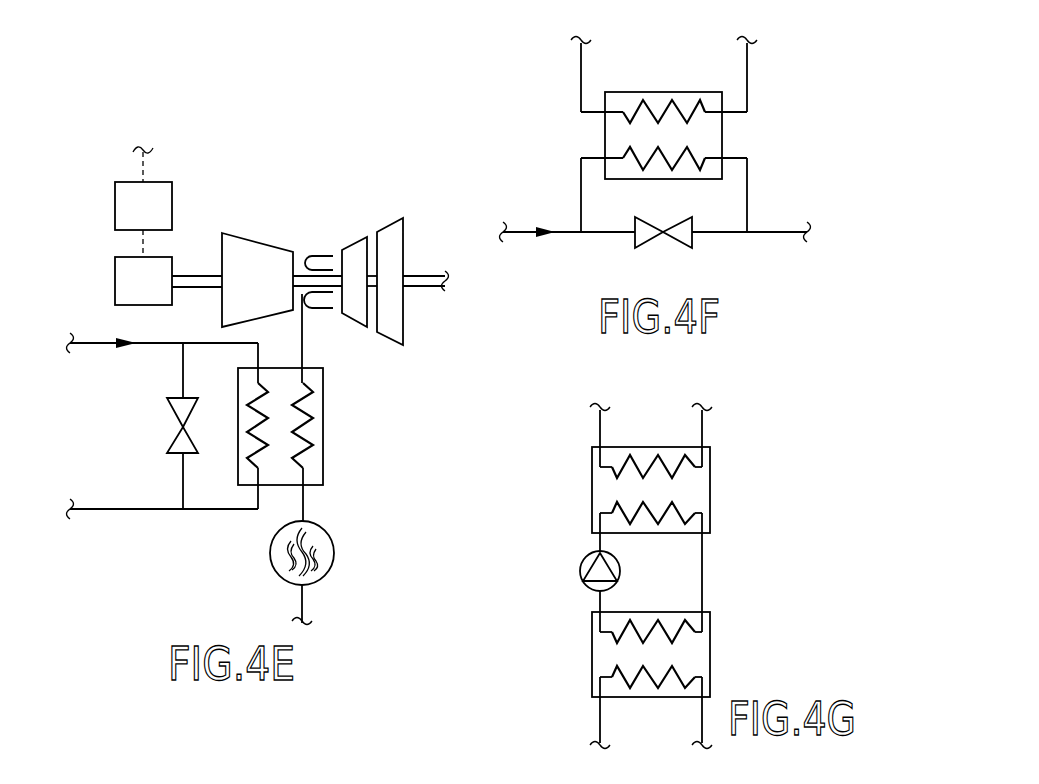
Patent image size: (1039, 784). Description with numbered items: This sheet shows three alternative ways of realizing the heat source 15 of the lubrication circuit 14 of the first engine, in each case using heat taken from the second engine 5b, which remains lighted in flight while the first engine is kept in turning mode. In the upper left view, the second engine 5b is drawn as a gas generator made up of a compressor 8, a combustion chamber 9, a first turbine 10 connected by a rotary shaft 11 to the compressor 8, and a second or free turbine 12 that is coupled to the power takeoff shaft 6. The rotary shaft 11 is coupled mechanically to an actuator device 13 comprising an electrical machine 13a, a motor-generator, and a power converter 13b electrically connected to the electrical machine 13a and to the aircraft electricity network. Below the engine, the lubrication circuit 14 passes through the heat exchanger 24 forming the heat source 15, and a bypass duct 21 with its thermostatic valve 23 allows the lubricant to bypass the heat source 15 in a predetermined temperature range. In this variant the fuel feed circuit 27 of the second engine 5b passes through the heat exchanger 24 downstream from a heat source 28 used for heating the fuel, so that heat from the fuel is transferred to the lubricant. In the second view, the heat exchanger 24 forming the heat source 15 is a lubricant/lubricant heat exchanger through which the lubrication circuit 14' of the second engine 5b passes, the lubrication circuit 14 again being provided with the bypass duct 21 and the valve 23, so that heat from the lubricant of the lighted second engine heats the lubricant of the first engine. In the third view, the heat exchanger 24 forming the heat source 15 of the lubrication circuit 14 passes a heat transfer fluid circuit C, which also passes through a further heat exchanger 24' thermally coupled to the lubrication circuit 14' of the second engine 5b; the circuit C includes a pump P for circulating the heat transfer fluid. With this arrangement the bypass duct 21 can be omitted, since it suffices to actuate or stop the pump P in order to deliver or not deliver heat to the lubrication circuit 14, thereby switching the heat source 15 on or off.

In FIG. 4E, the second engine 5b is at (147, 108).
In FIG. 4E, the actuator device 13 is at (192, 165).
In FIG. 4E, the electrical machine 13a is at (157, 292).
In FIG. 4E, the power converter 13b is at (157, 217).
In FIG. 4E, the rotary shaft 11 is at (198, 275).
In FIG. 4E, the compressor 8 is at (262, 292).
In FIG. 4E, the combustion chamber 9 is at (318, 256).
In FIG. 4E, the first turbine 10 is at (350, 319).
In FIG. 4E, the second turbine 12 is at (391, 228).
In FIG. 4E, the power takeoff shaft 6 is at (437, 287).
In FIG. 4E, the thermostatic valve 23 is at (181, 421).
In FIG. 4F, the thermostatic valve 23 is at (662, 239).
In FIG. 4E, the bypass duct 21 is at (182, 481).
In FIG. 4F, the bypass duct 21 is at (720, 235).
In FIG. 4E, the lubrication circuit 14 is at (163, 524).
In FIG. 4F, the lubrication circuit 14 is at (779, 247).
In FIG. 4G, the lubrication circuit 14 is at (585, 713).
In FIG. 4F, the lubrication circuit of the second engine 14' is at (688, 75).
In FIG. 4G, the lubrication circuit of the second engine 14' is at (676, 436).
In FIG. 4E, the heat source 15 is at (338, 413).
In FIG. 4F, the heat source 15 is at (766, 127).
In FIG. 4G, the heat source 15 is at (586, 637).
In FIG. 4E, the heat exchanger 24 is at (376, 407).
In FIG. 4F, the heat exchanger 24 is at (559, 135).
In FIG. 4G, the heat exchanger 24 is at (746, 654).
In FIG. 4G, the heat exchanger 24' is at (745, 490).
In FIG. 4E, the heat source 28 is at (337, 554).
In FIG. 4E, the fuel feed circuit 27 is at (304, 601).
In FIG. 4G, the pump P is at (580, 571).
In FIG. 4G, the heat transfer fluid circuit C is at (705, 573).